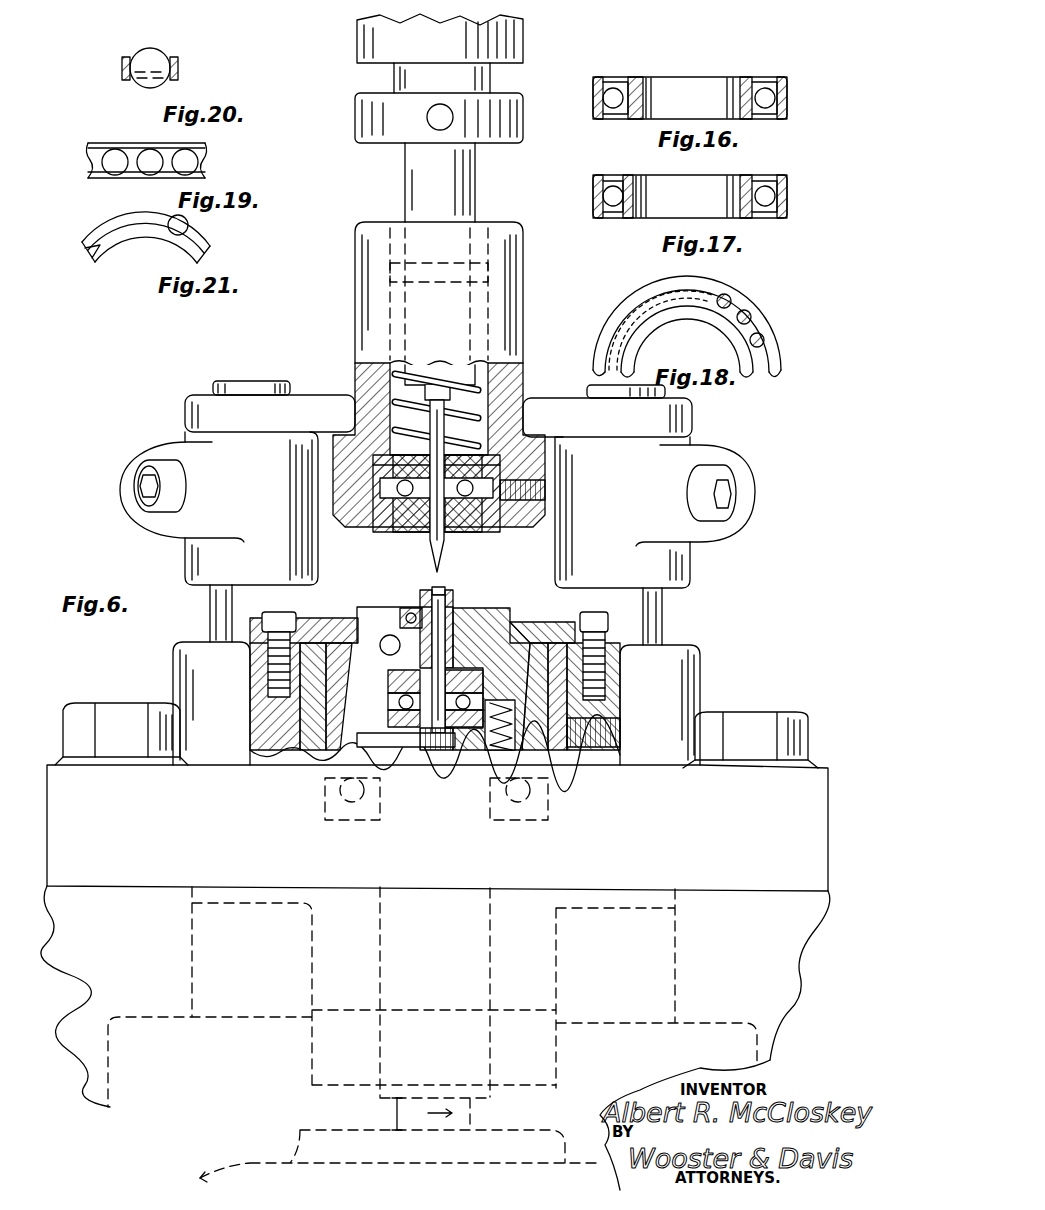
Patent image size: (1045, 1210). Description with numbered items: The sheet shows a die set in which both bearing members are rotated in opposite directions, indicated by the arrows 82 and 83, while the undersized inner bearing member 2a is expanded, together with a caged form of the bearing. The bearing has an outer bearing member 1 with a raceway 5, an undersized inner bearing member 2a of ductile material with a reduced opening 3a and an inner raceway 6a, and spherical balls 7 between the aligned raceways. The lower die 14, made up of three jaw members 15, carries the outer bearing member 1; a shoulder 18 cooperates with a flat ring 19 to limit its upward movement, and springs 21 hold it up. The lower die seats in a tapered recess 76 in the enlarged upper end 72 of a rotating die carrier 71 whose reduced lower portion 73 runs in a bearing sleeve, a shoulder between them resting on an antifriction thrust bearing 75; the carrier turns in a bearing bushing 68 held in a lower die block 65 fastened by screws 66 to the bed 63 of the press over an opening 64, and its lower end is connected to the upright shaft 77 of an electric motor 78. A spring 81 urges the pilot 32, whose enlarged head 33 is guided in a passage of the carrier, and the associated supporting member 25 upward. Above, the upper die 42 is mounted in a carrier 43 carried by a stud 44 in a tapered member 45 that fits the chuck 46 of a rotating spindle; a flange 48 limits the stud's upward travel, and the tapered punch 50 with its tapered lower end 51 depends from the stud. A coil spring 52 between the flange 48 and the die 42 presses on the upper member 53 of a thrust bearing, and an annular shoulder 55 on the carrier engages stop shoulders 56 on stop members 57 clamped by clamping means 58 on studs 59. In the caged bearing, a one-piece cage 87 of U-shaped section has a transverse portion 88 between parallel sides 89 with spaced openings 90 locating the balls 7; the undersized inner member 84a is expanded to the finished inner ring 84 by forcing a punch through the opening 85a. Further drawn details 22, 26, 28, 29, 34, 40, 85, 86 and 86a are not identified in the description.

In FIG. 16, the outer bearing member 1 is at (787, 85).
In FIG. 17, the outer bearing member 1 is at (787, 186).
In FIG. 18, the outer bearing member 1 is at (752, 306).
In FIG. 16, the raceway 5 is at (776, 95).
In FIG. 17, the raceway 5 is at (785, 196).
In FIG. 6, the spherical balls 7 is at (400, 616).
In FIG. 16, the spherical balls 7 is at (775, 100).
In FIG. 17, the spherical balls 7 is at (745, 198).
In FIG. 18, the spherical balls 7 is at (718, 298).
In FIG. 20, the spherical balls 7 is at (152, 50).
In FIG. 21, the spherical balls 7 is at (176, 236).
In FIG. 6, the undersized inner bearing member 2a is at (456, 592).
In FIG. 6, the longitudinal opening 3a is at (440, 588).
In FIG. 6, the inner raceway 6a is at (456, 604).
In FIG. 6, the lower die 14 is at (510, 612).
In FIG. 6, the jaw members 15 is at (520, 622).
In FIG. 6, the shoulder 18 is at (540, 625).
In FIG. 6, the flat ring 19 is at (352, 618).
In FIG. 6, the springs 21 is at (482, 758).
In FIG. 6, the bearing seat 22 is at (490, 608).
In FIG. 6, the supporting member 25 is at (418, 658).
In FIG. 6, the bearing 26 is at (388, 680).
In FIG. 6, the lower race 28 is at (390, 722).
In FIG. 6, the balls 29 is at (390, 705).
In FIG. 6, the pilot 32 is at (386, 638).
In FIG. 6, the enlarged head 33 is at (440, 760).
In FIG. 6, the retainer 34 is at (500, 480).
In FIG. 6, the shaft 40 is at (385, 668).
In FIG. 6, the upper die 42 is at (492, 532).
In FIG. 6, the carrier 43 is at (523, 335).
In FIG. 6, the stud 44 is at (476, 188).
In FIG. 6, the tapered member 45 is at (398, 73).
In FIG. 6, the chuck 46 is at (357, 45).
In FIG. 6, the flange 48 is at (490, 270).
In FIG. 6, the tapered punch 50 is at (405, 520).
In FIG. 6, the tapered lower end 51 is at (432, 555).
In FIG. 6, the coil spring 52 is at (505, 395).
In FIG. 6, the upper member 53 is at (435, 415).
In FIG. 6, the annular shoulder 55 is at (530, 437).
In FIG. 6, the stop shoulders 56 is at (545, 453).
In FIG. 6, the stop members 57 is at (694, 417).
In FIG. 6, the clamping means 58 is at (740, 485).
In FIG. 6, the studs 59 is at (663, 615).
In FIG. 6, the bed 63 is at (128, 886).
In FIG. 6, the opening 64 is at (194, 957).
In FIG. 6, the lower die block 65 is at (718, 697).
In FIG. 6, the screws 66 is at (762, 715).
In FIG. 6, the bearing bushing 68 is at (540, 760).
In FIG. 6, the die carrier 71 is at (600, 690).
In FIG. 6, the enlarged upper end 72 is at (292, 628).
In FIG. 6, the reduced lower portion 73 is at (490, 882).
In FIG. 6, the antifriction thrust bearing 75 is at (545, 798).
In FIG. 6, the tapered recess 76 is at (388, 698).
In FIG. 6, the upright shaft 77 is at (392, 1115).
In FIG. 6, the electric motor 78 is at (248, 1165).
In FIG. 6, the spring 81 is at (430, 770).
In FIG. 6, the arrow 82 is at (445, 205).
In FIG. 18, the arrow 82 is at (640, 312).
In FIG. 6, the arrow 83 is at (429, 1156).
In FIG. 17, the inner bearing member 84 is at (756, 180).
In FIG. 18, the inner bearing member 84 is at (663, 320).
In FIG. 16, the undersized inner bearing member 84a is at (752, 80).
In FIG. 17, the race groove 85 is at (655, 220).
In FIG. 18, the race groove 85 is at (718, 328).
In FIG. 16, the opening 85a is at (707, 82).
In FIG. 17, the spacer 86 is at (646, 193).
In FIG. 16, the spacer 86a is at (646, 100).
In FIG. 16, the cage 87 is at (613, 82).
In FIG. 17, the cage 87 is at (613, 180).
In FIG. 20, the cage 87 is at (189, 63).
In FIG. 19, the cage 87 is at (213, 150).
In FIG. 21, the cage 87 is at (220, 250).
In FIG. 20, the transverse portion 88 is at (130, 78).
In FIG. 19, the transverse portion 88 is at (92, 179).
In FIG. 21, the transverse portion 88 is at (122, 252).
In FIG. 20, the parallel sides 89 is at (120, 67).
In FIG. 19, the parallel sides 89 is at (138, 147).
In FIG. 21, the parallel sides 89 is at (88, 248).
In FIG. 19, the openings 90 is at (172, 170).
In FIG. 21, the openings 90 is at (146, 236).